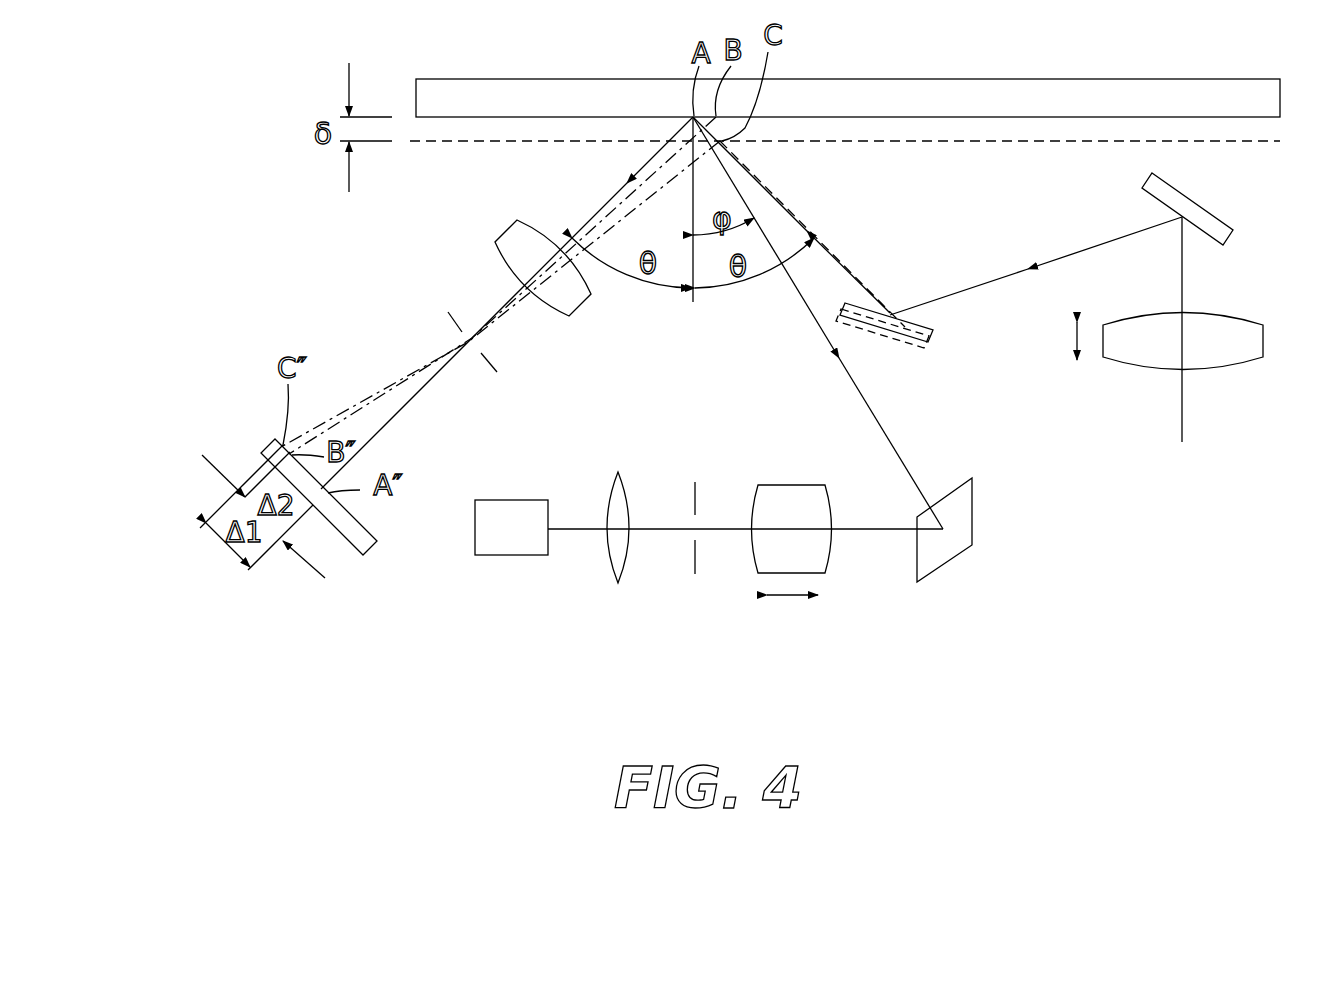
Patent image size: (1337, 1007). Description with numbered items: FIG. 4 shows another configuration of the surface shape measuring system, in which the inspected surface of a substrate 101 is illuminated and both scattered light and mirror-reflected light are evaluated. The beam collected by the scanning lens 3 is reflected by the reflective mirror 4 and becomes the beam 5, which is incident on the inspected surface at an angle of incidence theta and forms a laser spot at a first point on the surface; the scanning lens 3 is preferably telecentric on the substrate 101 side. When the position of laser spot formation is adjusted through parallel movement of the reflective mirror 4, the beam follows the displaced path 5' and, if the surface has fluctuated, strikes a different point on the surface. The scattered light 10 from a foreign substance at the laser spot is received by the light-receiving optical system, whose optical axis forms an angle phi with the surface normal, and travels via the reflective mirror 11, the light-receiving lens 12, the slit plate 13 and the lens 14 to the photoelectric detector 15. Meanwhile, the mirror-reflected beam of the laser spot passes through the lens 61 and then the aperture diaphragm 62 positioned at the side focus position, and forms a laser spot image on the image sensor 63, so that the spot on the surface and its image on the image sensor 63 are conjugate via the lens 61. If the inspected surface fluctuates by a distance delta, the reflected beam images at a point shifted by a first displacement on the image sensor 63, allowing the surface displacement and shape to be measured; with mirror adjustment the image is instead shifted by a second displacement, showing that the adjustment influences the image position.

The substrate 101 is at (581, 92).
The scanning lens 3 is at (1258, 338).
The reflective mirror 4 is at (933, 333).
The beam 5 is at (791, 215).
The beam 5' is at (812, 234).
The scattered light 10 is at (827, 340).
The reflective mirror 11 is at (973, 515).
The light-receiving lens 12 is at (788, 488).
The slit plate 13 is at (695, 482).
The lens 14 is at (620, 472).
The photoelectric detector 15 is at (523, 500).
The lens 61 is at (512, 240).
The aperture diaphragm 62 is at (450, 318).
The image sensor 63 is at (370, 560).